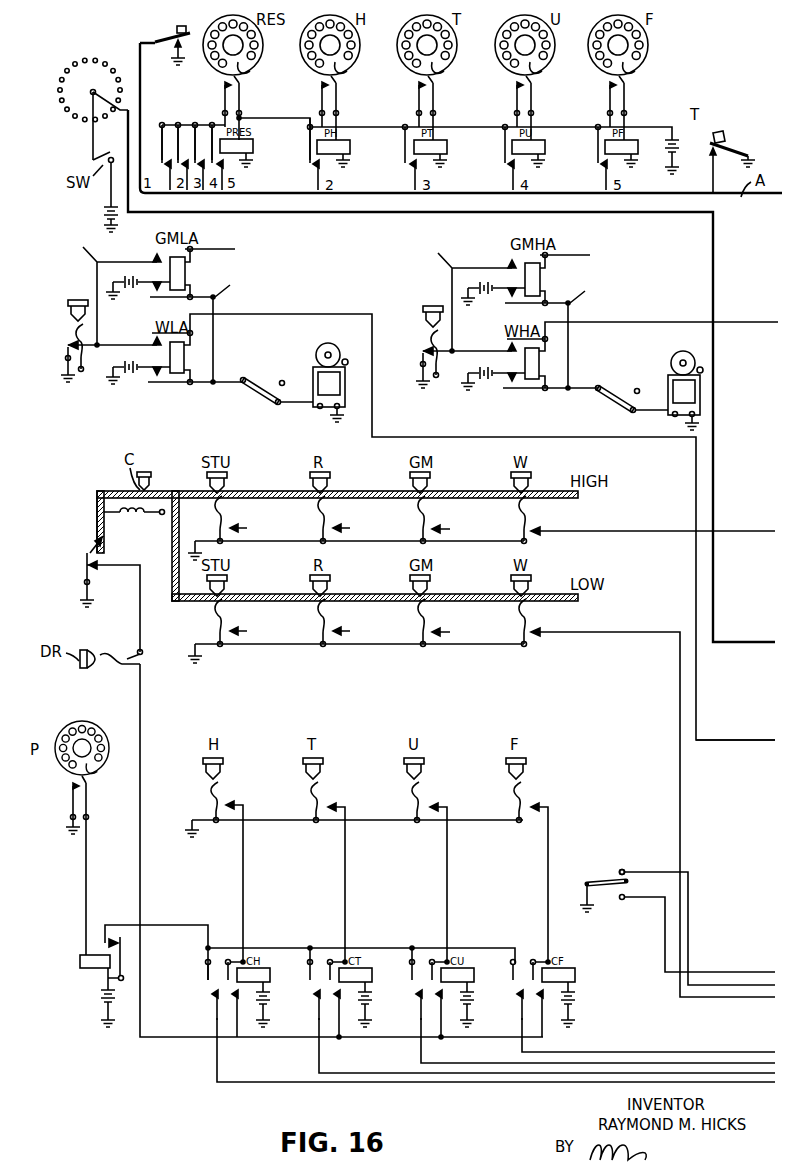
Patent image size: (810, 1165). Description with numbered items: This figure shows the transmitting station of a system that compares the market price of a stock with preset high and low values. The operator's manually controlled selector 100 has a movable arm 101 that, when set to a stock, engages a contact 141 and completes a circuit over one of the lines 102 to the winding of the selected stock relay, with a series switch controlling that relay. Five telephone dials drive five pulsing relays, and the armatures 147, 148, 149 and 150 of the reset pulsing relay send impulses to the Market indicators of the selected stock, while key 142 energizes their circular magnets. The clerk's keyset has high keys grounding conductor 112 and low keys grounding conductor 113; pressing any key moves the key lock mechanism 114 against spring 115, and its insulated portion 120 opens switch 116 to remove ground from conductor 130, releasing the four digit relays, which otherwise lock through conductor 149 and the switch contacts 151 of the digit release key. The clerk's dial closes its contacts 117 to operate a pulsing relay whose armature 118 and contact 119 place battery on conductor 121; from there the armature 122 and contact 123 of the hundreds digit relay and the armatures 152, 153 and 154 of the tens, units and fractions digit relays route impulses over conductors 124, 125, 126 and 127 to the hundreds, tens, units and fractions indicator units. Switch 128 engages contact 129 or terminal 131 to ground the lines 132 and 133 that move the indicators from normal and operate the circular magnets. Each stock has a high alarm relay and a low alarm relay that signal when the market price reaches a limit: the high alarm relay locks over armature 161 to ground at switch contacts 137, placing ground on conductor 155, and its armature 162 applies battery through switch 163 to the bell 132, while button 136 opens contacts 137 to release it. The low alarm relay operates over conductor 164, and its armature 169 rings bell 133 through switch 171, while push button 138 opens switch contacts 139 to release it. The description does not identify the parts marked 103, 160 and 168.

The selector 100 is at (74, 89).
The movable arm 101 is at (110, 98).
The contact 141 is at (110, 125).
The switch 103 is at (173, 33).
The armature 147 is at (162, 143).
The armature 148 is at (178, 133).
The armature 149 is at (195, 143).
The armature 150 is at (212, 133).
The conductor 160 is at (310, 140).
The key 142 is at (734, 143).
The lines 102 is at (258, 214).
The push button 138 is at (79, 300).
The switch contacts 139 is at (67, 352).
The contact 168 is at (153, 336).
The armature 169 is at (163, 384).
The switch 171 is at (259, 402).
The bell 133 is at (312, 383).
The button 136 is at (434, 306).
The switch contacts 137 is at (422, 358).
The armature 161 is at (508, 342).
The armature 162 is at (518, 390).
The switch 163 is at (605, 406).
The bell 132 is at (666, 389).
The conductor 155 is at (727, 321).
The key lock mechanism 114 is at (97, 502).
The spring 115 is at (136, 516).
The insulated portion 120 is at (90, 548).
The switch 116 is at (85, 557).
The conductor 130 is at (140, 604).
The conductor 112 is at (613, 531).
The conductor 113 is at (613, 632).
The switch contacts 151 is at (114, 667).
The contacts 117 is at (72, 788).
The contact 119 is at (110, 940).
The conductor 121 is at (152, 928).
The armature 118 is at (124, 966).
The armature 122 is at (209, 979).
The contact 123 is at (214, 994).
The conductor 124 is at (215, 1065).
The conductor 125 is at (318, 1054).
The conductor 126 is at (420, 1052).
The conductor 127 is at (523, 1043).
The switch 128 is at (591, 881).
The contact 129 is at (623, 867).
The contact 131 is at (623, 902).
The armature 152 is at (312, 988).
The armature 153 is at (414, 988).
The armature 154 is at (515, 988).
The conductor 164 is at (708, 740).